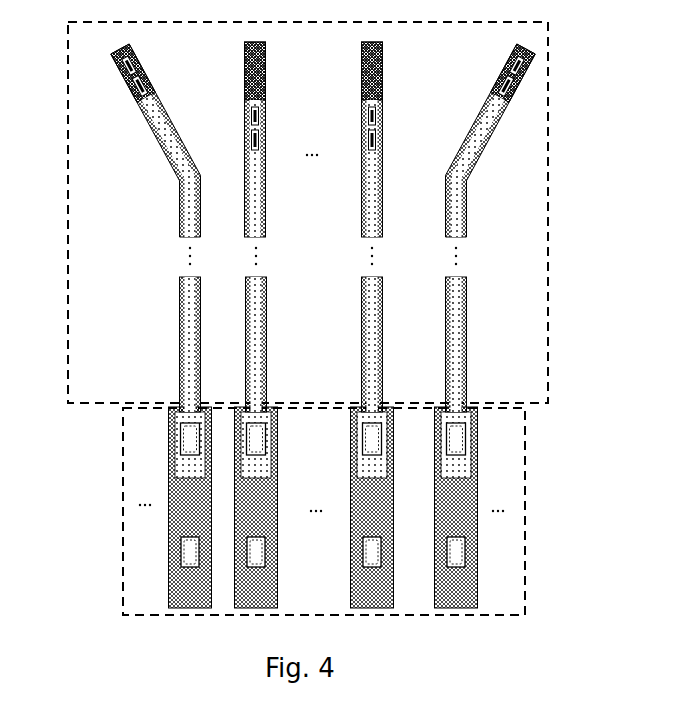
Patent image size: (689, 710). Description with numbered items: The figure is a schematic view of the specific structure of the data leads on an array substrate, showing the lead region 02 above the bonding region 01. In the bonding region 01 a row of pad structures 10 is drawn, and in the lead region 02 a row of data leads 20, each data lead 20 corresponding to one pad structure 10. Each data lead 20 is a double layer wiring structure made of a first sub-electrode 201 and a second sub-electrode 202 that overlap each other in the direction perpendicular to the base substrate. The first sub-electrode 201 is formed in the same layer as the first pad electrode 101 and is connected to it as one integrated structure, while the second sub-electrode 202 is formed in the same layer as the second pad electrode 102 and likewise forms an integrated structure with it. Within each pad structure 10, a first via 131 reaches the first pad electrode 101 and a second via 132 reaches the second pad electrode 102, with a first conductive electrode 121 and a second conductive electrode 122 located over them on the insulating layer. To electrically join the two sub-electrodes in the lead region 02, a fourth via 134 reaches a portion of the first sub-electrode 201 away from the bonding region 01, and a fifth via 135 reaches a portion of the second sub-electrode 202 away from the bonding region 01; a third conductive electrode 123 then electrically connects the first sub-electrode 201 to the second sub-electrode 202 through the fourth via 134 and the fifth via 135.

The bonding region 01 is at (137, 590).
The lead region 02 is at (535, 258).
The pad structure 10 is at (266, 507).
The first pad electrode 101 is at (170, 514).
The second pad electrode 102 is at (172, 465).
The first conductive electrode 121 is at (323, 554).
The second conductive electrode 122 is at (323, 442).
The third conductive electrode 123 is at (323, 103).
The first via 131 is at (258, 550).
The second via 132 is at (258, 440).
The fourth via 134 is at (263, 113).
The fifth via 135 is at (263, 136).
The data lead 20 is at (305, 227).
The first sub-electrode 201 is at (244, 62).
The second sub-electrode 202 is at (266, 200).